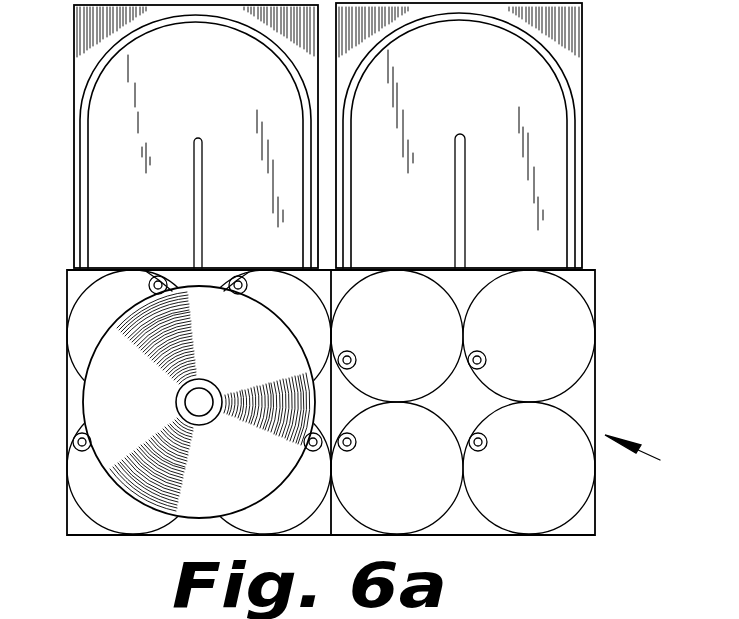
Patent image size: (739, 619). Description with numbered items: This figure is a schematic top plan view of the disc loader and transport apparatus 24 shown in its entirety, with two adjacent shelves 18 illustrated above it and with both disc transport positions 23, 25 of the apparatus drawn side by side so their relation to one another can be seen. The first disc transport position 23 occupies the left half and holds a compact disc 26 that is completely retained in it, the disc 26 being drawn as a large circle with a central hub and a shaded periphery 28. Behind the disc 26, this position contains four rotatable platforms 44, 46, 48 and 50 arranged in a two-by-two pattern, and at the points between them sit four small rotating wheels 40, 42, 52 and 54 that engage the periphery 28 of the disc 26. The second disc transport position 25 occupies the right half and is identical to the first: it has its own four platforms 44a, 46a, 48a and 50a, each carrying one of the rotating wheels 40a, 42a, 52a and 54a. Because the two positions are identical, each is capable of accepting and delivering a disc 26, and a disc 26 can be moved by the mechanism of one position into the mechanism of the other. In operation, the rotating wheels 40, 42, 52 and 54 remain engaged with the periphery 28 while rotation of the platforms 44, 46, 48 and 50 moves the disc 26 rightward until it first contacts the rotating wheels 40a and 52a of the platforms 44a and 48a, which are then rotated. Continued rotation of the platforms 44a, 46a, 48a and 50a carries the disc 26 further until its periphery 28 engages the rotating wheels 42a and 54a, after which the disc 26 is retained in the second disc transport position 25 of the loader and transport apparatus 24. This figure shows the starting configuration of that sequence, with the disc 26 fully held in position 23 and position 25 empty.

The shelf 18 is at (328, 135).
The disc transport position 23 is at (72, 388).
The loader and transport apparatus 24 is at (648, 456).
The disc transport position 25 is at (590, 397).
The disc 26 is at (210, 401).
The periphery 28 is at (293, 338).
The rotating wheel 40 is at (148, 271).
The rotating wheel 42 is at (247, 271).
The platform 44 is at (78, 337).
The platform 46 is at (278, 300).
The platform 48 is at (79, 477).
The platform 50 is at (268, 505).
The rotating wheel 52 is at (73, 443).
The rotating wheel 54 is at (302, 458).
The rotating wheel 40a is at (354, 356).
The rotating wheel 42a is at (484, 356).
The platform 44a is at (397, 336).
The platform 46a is at (529, 336).
The platform 48a is at (397, 468).
The platform 50a is at (529, 468).
The rotating wheel 52a is at (354, 446).
The rotating wheel 54a is at (485, 446).